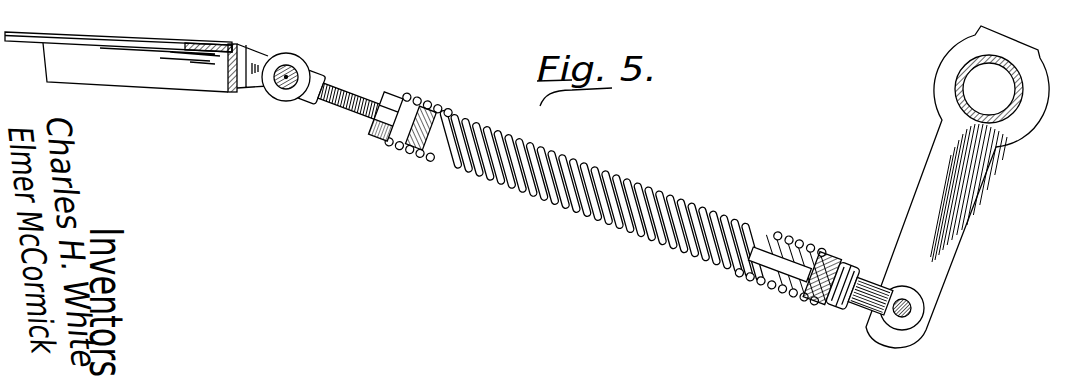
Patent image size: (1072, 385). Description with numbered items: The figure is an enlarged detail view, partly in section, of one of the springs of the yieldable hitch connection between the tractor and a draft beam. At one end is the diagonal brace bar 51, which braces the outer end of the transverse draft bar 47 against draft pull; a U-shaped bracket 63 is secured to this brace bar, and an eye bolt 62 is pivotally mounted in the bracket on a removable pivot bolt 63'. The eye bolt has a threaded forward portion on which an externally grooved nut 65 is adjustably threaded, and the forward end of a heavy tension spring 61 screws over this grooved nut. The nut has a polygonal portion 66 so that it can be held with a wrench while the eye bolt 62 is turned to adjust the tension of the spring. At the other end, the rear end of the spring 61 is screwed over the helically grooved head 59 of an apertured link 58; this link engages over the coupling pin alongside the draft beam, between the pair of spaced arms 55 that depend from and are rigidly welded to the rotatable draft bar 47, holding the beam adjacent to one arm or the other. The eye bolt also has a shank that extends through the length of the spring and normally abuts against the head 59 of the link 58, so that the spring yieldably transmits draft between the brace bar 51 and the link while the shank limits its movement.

The draft bar 47 is at (961, 86).
The diagonal brace bar 51 is at (222, 31).
The arm 55 is at (938, 163).
The apertured link 58 is at (882, 287).
The helically grooved head 59 is at (847, 308).
The tension spring 61 is at (664, 247).
The eye bolt 62 is at (337, 109).
The U-shaped bracket 63 is at (281, 62).
The removable pivot bolt 63' is at (276, 105).
The externally grooved nut 65 is at (428, 158).
The polygonal portion 66 is at (384, 138).